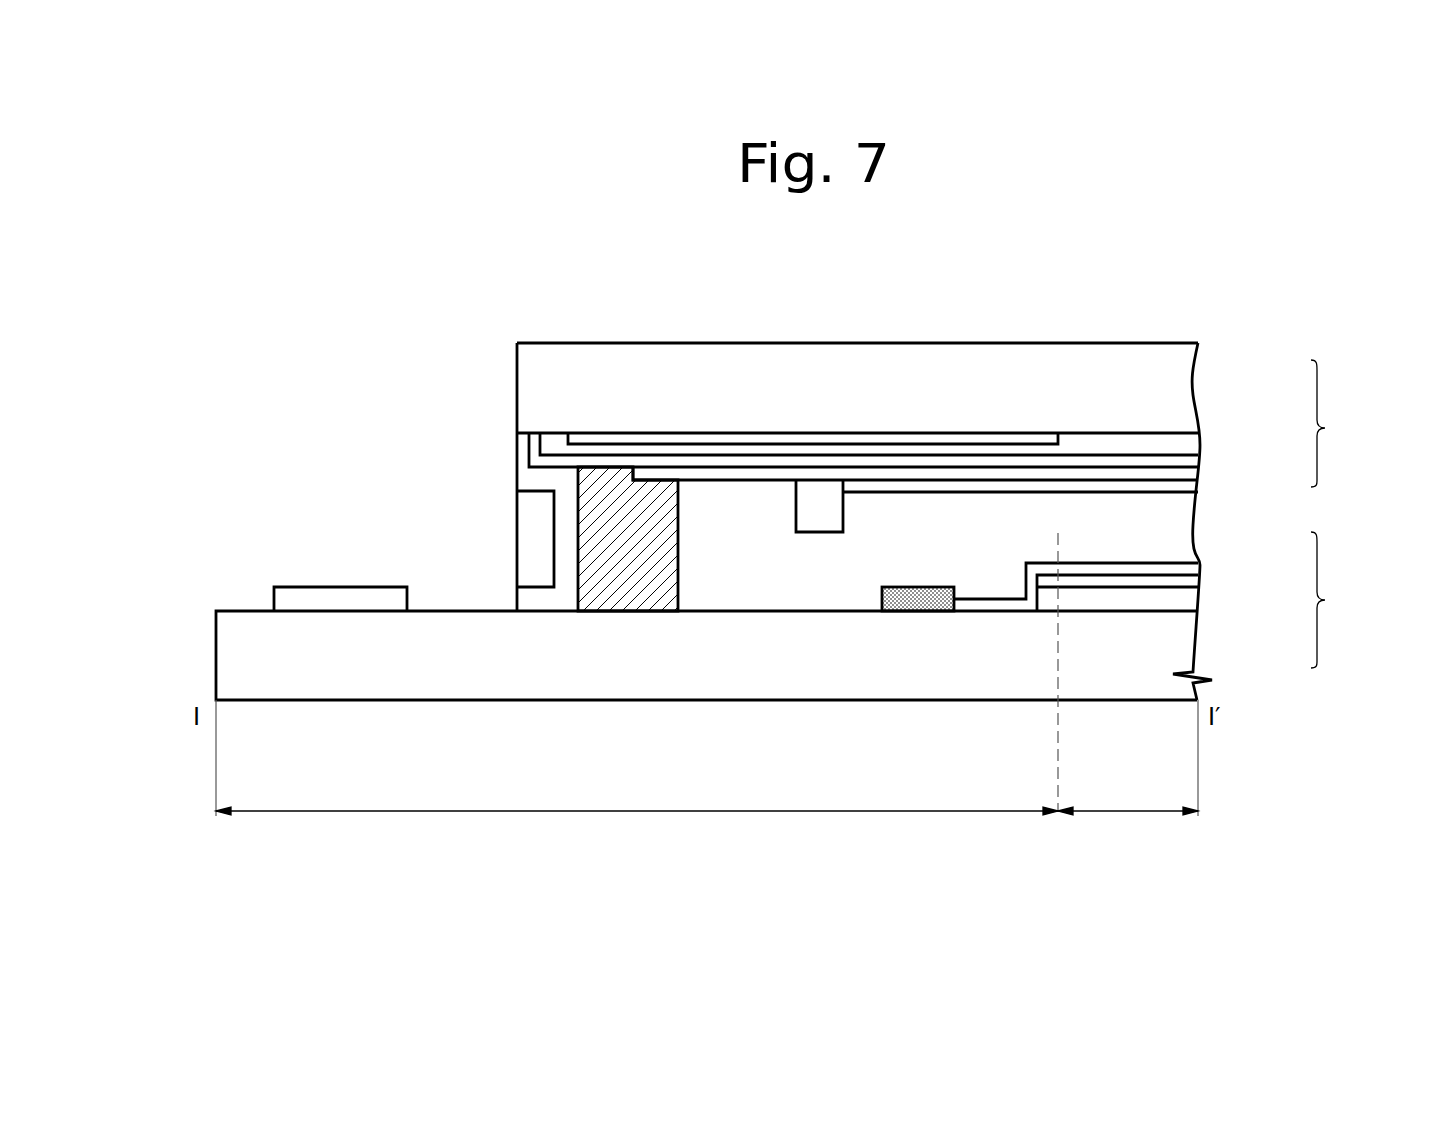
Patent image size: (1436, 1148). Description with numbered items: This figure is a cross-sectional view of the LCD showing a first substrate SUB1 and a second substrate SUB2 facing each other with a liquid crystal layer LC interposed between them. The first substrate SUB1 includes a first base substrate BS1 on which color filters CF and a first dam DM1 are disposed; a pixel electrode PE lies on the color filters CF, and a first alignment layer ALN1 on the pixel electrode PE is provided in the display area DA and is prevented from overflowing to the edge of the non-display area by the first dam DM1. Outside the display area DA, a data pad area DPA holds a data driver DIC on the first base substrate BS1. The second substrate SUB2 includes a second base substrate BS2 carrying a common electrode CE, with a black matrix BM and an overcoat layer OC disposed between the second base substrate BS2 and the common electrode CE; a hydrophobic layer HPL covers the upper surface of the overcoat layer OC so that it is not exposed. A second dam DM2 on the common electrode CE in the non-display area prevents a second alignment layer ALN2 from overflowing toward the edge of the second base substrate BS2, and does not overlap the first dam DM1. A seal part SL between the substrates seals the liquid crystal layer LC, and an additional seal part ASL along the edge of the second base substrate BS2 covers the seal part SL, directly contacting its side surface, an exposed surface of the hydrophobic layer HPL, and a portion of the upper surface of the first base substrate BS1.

The second base substrate BS2 is at (1178, 370).
The overcoat layer OC is at (1180, 447).
The hydrophobic layer HPL is at (1180, 458).
The common electrode CE is at (1180, 472).
The second alignment layer ALN2 is at (1180, 486).
The black matrix BM is at (908, 440).
The liquid crystal layer LC is at (1180, 519).
The second substrate SUB2 is at (1345, 423).
The additional seal part ASL is at (528, 477).
The seal part SL is at (626, 492).
The second dam DM2 is at (813, 492).
The data driver DIC is at (340, 598).
The first dam DM1 is at (917, 598).
The first alignment layer ALN1 is at (1180, 570).
The pixel electrode PE is at (1180, 579).
The color filters CF is at (1180, 601).
The first base substrate BS1 is at (1178, 649).
The first substrate SUB1 is at (1345, 600).
The data pad area DPA is at (637, 824).
The display area DA is at (1128, 824).